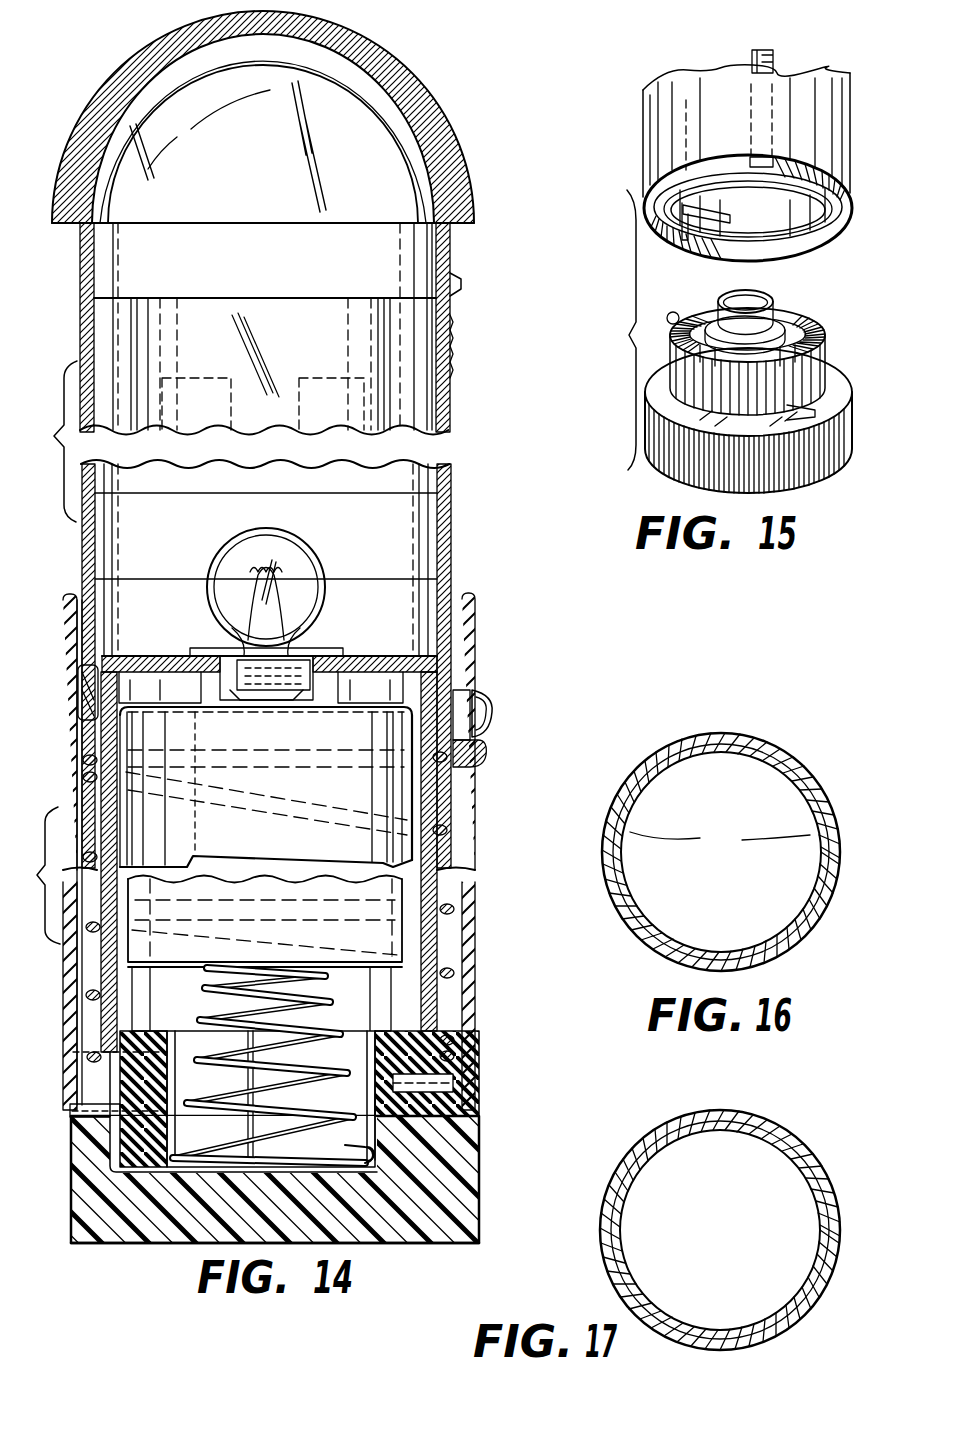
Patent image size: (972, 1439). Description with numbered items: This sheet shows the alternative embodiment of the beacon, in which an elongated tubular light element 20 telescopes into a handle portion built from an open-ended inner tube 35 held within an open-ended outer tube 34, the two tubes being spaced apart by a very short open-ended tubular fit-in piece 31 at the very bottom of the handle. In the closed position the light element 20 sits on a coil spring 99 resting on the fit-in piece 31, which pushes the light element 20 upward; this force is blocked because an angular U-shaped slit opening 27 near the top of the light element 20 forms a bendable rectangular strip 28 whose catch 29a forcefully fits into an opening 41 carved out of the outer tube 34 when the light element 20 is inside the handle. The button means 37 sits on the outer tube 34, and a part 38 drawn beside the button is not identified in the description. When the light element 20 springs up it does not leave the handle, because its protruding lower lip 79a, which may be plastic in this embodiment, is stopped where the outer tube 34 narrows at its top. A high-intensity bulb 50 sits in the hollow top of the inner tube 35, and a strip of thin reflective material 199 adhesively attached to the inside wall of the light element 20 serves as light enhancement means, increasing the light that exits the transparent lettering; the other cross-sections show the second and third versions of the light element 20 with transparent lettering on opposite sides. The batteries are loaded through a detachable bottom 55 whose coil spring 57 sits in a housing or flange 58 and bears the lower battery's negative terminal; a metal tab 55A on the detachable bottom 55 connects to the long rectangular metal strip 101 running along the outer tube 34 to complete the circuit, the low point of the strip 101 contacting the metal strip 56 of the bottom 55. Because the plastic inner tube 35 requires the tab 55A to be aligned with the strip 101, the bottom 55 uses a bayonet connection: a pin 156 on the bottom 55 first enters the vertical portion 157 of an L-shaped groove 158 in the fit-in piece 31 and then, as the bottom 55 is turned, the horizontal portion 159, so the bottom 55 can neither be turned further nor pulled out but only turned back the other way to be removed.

In FIG. 14, the light element 20 is at (450, 400).
In FIG. 16, the light element 20 is at (822, 792).
In FIG. 17, the light element 20 is at (808, 1166).
In FIG. 14, the slit opening 27 is at (450, 378).
In FIG. 14, the bendable rectangular strip 28 is at (450, 300).
In FIG. 14, the catch 29a is at (462, 274).
In FIG. 14, the fit-in piece 31 is at (75, 1106).
In FIG. 14, the outer tube 34 is at (481, 901).
In FIG. 14, the inner tube 35 is at (109, 1023).
In FIG. 14, the button means 37 is at (482, 693).
In FIG. 14, the switch body 38 is at (483, 748).
In FIG. 14, the opening 41 is at (463, 670).
In FIG. 14, the bulb 50 is at (294, 553).
In FIG. 14, the detachable bottom 55 is at (466, 1161).
In FIG. 15, the detachable bottom 55 is at (848, 427).
In FIG. 15, the metal tab 55A is at (812, 483).
In FIG. 14, the metal strip 56 is at (127, 1175).
In FIG. 14, the coil spring 57 is at (150, 1148).
In FIG. 15, the coil spring 57 is at (764, 289).
In FIG. 15, the housing 58 is at (826, 350).
In FIG. 14, the lower lip 79a is at (80, 741).
In FIG. 14, the coil spring 99 is at (80, 986).
In FIG. 15, the long metal strip 101 is at (772, 53).
In FIG. 14, the pin 156 is at (466, 1064).
In FIG. 15, the pin 156 is at (679, 312).
In FIG. 14, the vertical portion 157 is at (325, 1104).
In FIG. 15, the vertical portion 157 is at (683, 212).
In FIG. 14, the L-shaped groove 158 is at (337, 1102).
In FIG. 15, the L-shaped groove 158 is at (728, 197).
In FIG. 14, the horizontal portion 159 is at (456, 1091).
In FIG. 15, the horizontal portion 159 is at (718, 222).
In FIG. 14, the strip of thin reflective material 199 is at (327, 310).
In FIG. 16, the strip of thin reflective material 199 is at (720, 842).